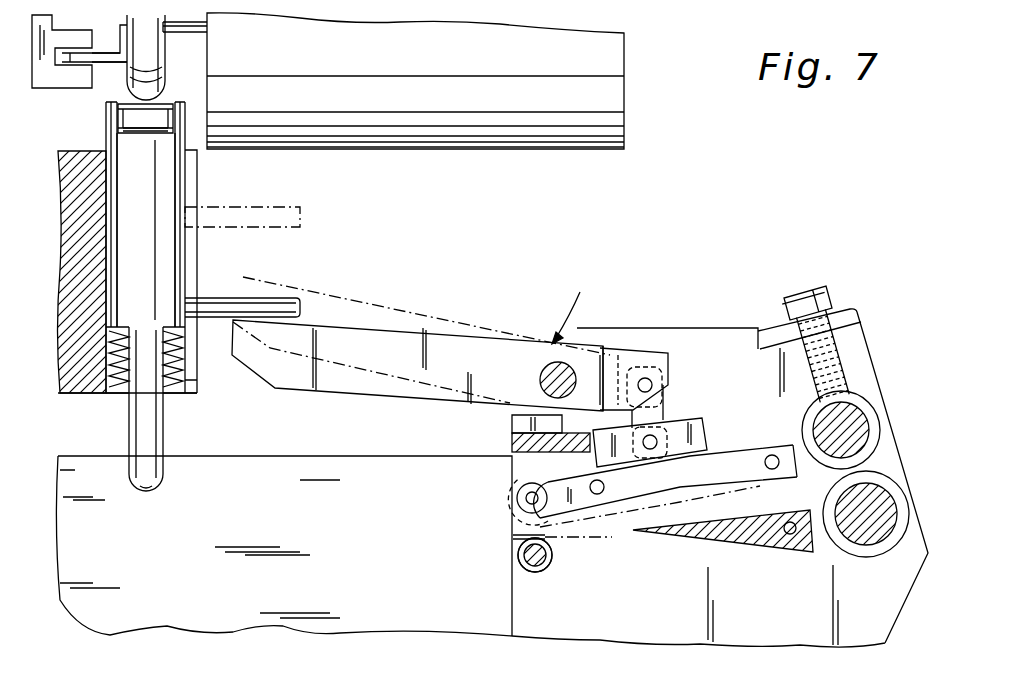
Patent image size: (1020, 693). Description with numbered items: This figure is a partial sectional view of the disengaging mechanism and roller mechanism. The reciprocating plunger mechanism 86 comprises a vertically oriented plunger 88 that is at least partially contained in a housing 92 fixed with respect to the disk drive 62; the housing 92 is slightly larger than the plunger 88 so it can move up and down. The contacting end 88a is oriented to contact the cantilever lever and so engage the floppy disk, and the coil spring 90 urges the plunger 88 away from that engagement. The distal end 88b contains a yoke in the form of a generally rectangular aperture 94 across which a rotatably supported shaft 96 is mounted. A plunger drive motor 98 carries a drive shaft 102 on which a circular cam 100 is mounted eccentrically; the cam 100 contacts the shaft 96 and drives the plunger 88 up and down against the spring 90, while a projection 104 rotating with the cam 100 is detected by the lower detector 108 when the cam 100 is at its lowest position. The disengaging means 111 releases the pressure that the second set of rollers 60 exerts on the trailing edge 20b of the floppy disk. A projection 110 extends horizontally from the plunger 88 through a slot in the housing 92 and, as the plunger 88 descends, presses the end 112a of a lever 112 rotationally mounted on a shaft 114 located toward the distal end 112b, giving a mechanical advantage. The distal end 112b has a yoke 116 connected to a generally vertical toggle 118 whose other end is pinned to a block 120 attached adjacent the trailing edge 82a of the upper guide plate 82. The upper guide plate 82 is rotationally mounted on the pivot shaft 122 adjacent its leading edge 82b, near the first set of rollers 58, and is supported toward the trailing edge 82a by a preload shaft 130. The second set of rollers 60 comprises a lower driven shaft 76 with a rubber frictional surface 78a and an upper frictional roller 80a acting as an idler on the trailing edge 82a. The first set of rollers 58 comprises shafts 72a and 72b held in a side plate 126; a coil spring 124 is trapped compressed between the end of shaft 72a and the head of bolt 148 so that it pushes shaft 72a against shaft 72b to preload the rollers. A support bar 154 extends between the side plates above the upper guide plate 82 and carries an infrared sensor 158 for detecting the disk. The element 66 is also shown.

The trailing edge 20b is at (553, 536).
The first set of rollers 58 is at (867, 433).
The second set of rollers 60 is at (562, 472).
The disk drive 62 is at (402, 610).
The wedge 66 is at (765, 543).
The shaft 72a is at (883, 455).
The shaft 72b is at (863, 538).
The lower driven shaft 76 is at (534, 577).
The frictional surface 78a is at (518, 560).
The upper frictional roller 80a is at (517, 498).
The upper guide plate 82 is at (687, 482).
The trailing edge 82a is at (520, 478).
The leading edge 82b is at (765, 432).
The reciprocating plunger mechanism 86 is at (262, 201).
The plunger 88 is at (165, 210).
The contacting end 88a is at (158, 480).
The distal end 88b is at (173, 132).
The coil spring 90 is at (178, 372).
The housing 92 is at (78, 375).
The aperture 94 is at (172, 153).
The shaft 96 is at (140, 132).
The plunger drive motor 98 is at (612, 94).
The circular cam 100 is at (152, 45).
The drive shaft 102 is at (208, 21).
The projection 104 is at (117, 67).
The lower detector 108 is at (68, 65).
The projection 110 is at (214, 298).
The disengaging means 111 is at (579, 305).
The lever 112 is at (393, 333).
The end 112a is at (275, 278).
The distal end 112b is at (642, 350).
The shaft 114 is at (540, 380).
The yoke 116 is at (668, 356).
The toggle 118 is at (667, 400).
The block 120 is at (702, 427).
The pivot shaft 122 is at (772, 470).
The coil spring 124 is at (838, 372).
The side plate 126 is at (880, 627).
The preload shaft 130 is at (604, 487).
The bolt 148 is at (822, 284).
The support bar 154 is at (512, 440).
The sensor 158 is at (512, 420).